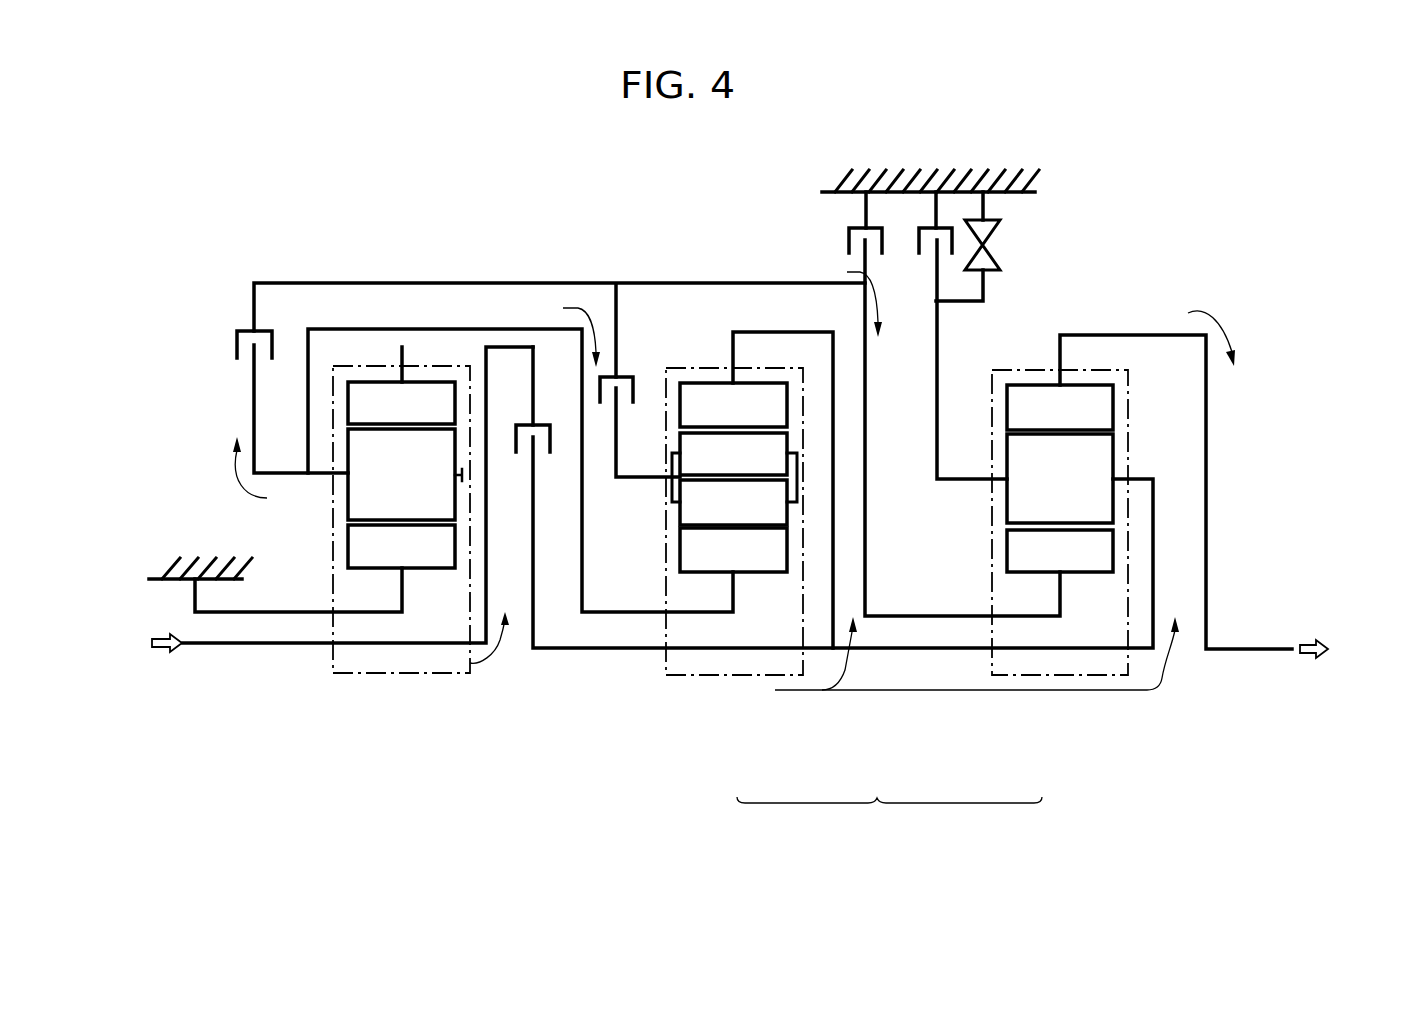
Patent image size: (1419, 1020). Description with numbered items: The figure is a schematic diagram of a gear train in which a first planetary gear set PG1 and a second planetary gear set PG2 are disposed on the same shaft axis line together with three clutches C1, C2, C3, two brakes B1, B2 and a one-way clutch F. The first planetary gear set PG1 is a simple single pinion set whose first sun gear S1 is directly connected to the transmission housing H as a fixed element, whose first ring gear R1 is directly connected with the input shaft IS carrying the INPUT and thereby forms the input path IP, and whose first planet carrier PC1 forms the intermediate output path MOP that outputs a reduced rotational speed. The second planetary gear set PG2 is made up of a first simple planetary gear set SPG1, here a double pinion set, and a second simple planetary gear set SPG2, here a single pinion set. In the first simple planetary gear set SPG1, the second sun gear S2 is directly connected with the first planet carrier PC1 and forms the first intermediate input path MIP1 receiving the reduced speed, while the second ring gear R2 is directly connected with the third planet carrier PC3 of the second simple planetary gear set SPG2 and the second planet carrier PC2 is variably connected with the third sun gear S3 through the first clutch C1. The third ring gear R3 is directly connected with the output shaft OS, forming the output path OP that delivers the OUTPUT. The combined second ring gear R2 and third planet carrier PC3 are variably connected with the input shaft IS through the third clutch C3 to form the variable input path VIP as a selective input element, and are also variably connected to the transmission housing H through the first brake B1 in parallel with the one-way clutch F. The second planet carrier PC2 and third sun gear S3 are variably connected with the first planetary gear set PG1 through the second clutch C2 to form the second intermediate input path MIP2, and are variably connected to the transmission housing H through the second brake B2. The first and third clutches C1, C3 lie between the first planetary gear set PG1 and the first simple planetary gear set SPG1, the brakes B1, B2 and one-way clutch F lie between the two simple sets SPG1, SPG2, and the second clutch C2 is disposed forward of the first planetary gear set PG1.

The first clutch C1 is at (640, 381).
The second clutch C2 is at (536, 378).
The third clutch C3 is at (834, 497).
The first brake B1 is at (922, 224).
The second brake B2 is at (851, 224).
The one-way clutch F is at (976, 246).
The transmission housing H is at (160, 575).
The first ring gear R1 is at (401, 403).
The first sun gear S1 is at (325, 568).
The first planet carrier PC1 is at (322, 478).
The second ring gear R2 is at (756, 490).
The second sun gear S2 is at (733, 550).
The second planet carrier PC2 is at (652, 483).
The third ring gear R3 is at (1060, 407).
The third sun gear S3 is at (989, 428).
The third planet carrier PC3 is at (968, 477).
The first planetary gear set PG1 is at (401, 688).
The second planetary gear set PG2 is at (889, 817).
The first simple planetary gear set SPG1 is at (740, 690).
The second simple planetary gear set SPG2 is at (1047, 690).
The input shaft IS is at (213, 648).
The output shaft OS is at (1253, 652).
The input path IP is at (498, 637).
The output path OP is at (1227, 338).
The intermediate output path MOP is at (229, 467).
The first intermediate input path MIP1 is at (560, 333).
The second intermediate input path MIP2 is at (841, 302).
The variable input path VIP is at (993, 655).
The input INPUT is at (115, 645).
The output OUTPUT is at (1371, 651).